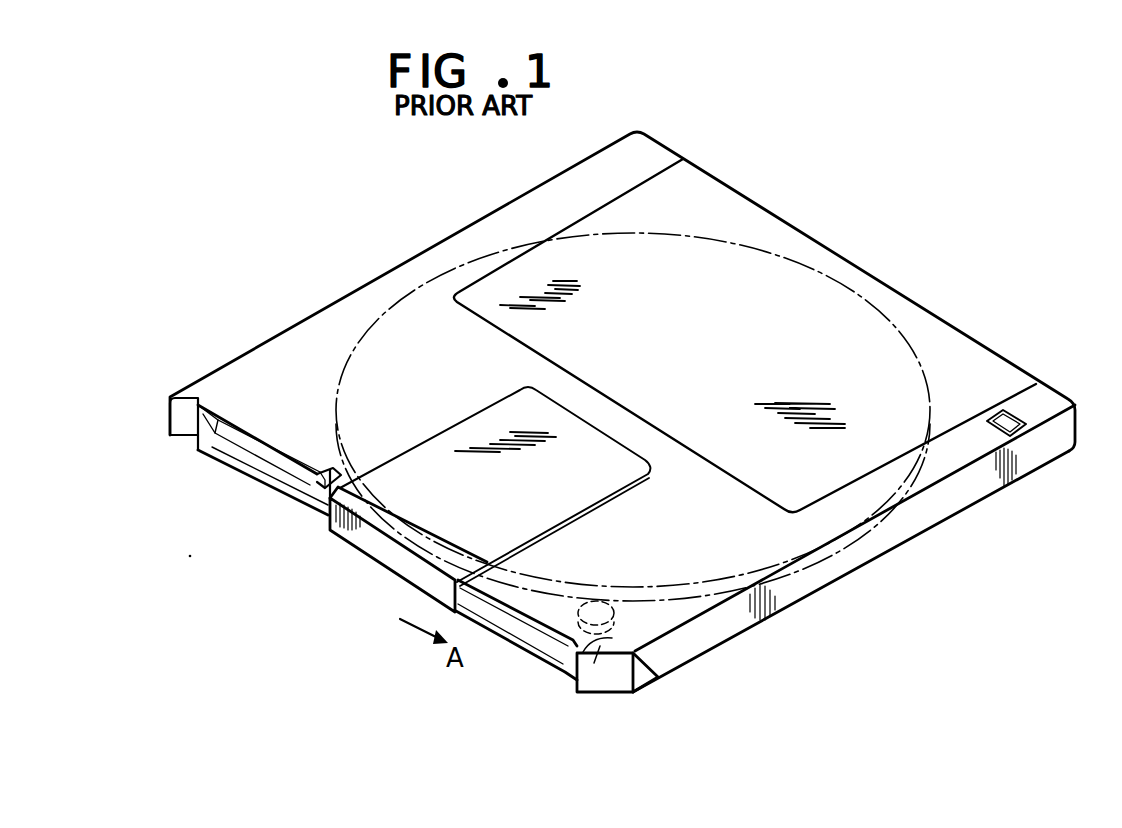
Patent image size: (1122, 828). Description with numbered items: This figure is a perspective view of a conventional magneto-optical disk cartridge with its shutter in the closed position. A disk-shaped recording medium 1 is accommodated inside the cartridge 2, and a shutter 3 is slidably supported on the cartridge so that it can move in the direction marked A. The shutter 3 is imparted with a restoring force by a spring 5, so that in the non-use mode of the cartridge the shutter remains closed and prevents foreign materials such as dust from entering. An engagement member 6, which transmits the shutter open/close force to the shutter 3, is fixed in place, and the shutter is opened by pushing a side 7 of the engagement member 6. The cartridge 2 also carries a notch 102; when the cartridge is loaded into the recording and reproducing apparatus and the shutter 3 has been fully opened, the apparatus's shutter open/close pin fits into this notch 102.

The disk-shaped recording medium 1 is at (840, 310).
The cartridge 2 is at (638, 152).
The shutter 3 is at (387, 557).
The spring 5 is at (660, 678).
The engagement member 6 is at (293, 492).
The side 7 is at (190, 433).
The notch 102 is at (325, 463).